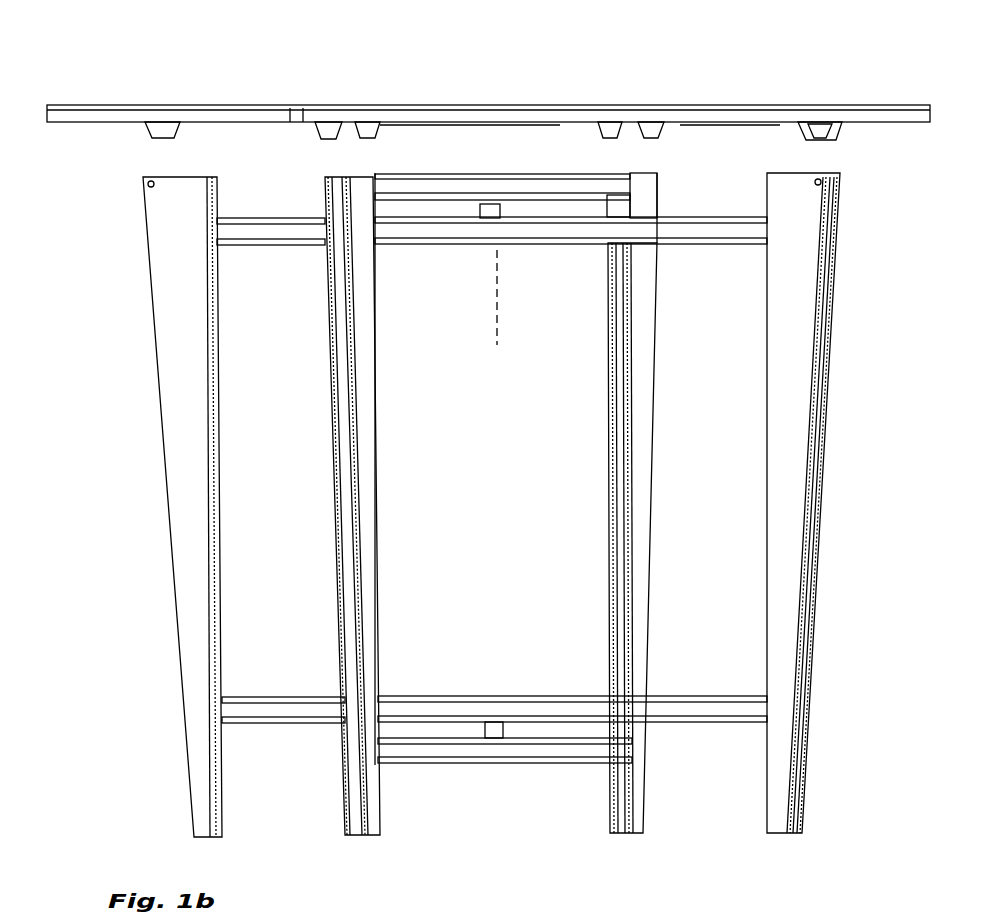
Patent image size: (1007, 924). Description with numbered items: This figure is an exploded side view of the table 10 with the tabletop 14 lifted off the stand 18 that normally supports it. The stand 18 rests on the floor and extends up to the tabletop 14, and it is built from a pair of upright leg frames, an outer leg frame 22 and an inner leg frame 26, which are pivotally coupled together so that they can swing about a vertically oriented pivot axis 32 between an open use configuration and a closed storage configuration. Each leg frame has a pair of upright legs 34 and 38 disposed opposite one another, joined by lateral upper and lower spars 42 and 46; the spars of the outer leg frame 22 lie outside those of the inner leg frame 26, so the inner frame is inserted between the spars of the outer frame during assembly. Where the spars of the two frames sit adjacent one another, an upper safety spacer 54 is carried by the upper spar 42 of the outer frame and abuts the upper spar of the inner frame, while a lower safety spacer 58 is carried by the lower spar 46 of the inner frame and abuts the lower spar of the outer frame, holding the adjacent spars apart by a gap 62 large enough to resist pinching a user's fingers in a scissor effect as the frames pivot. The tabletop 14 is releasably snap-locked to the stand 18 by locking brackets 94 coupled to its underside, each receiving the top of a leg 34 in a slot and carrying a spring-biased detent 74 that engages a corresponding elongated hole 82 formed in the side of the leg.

The table 10 is at (150, 670).
The tabletop 14 is at (546, 113).
The stand 18 is at (817, 337).
The outer leg frame 22 is at (352, 434).
The inner leg frame 26 is at (177, 448).
The pivot axis 32 is at (495, 317).
The upright leg 34 is at (172, 322).
The upright leg 38 is at (645, 502).
The upper spar 42 is at (272, 232).
The lower spar 46 is at (297, 710).
The upper safety spacer 54 is at (497, 208).
The lower safety spacer 58 is at (498, 731).
The gap 62 is at (585, 210).
The detent 74 is at (340, 128).
The hole 82 is at (150, 185).
The locking bracket 94 is at (370, 128).